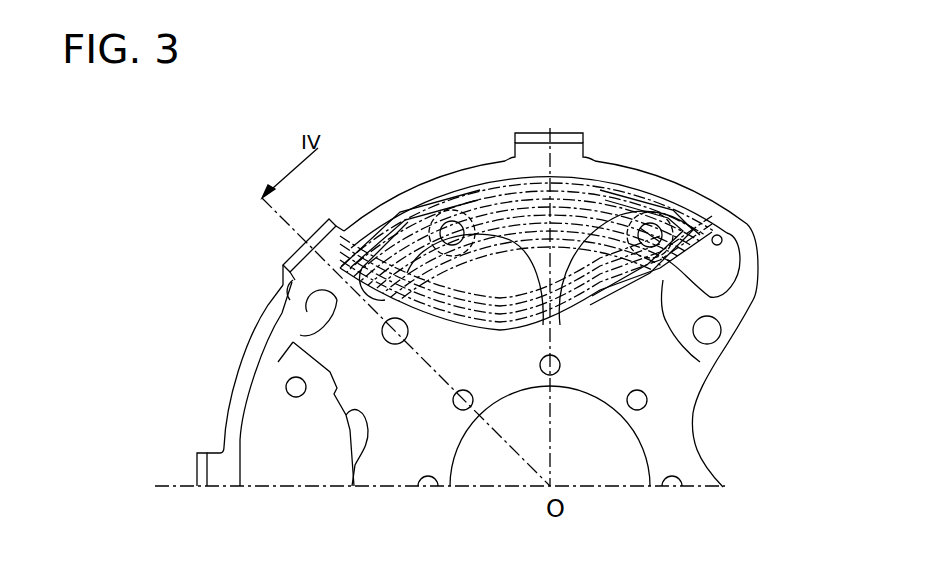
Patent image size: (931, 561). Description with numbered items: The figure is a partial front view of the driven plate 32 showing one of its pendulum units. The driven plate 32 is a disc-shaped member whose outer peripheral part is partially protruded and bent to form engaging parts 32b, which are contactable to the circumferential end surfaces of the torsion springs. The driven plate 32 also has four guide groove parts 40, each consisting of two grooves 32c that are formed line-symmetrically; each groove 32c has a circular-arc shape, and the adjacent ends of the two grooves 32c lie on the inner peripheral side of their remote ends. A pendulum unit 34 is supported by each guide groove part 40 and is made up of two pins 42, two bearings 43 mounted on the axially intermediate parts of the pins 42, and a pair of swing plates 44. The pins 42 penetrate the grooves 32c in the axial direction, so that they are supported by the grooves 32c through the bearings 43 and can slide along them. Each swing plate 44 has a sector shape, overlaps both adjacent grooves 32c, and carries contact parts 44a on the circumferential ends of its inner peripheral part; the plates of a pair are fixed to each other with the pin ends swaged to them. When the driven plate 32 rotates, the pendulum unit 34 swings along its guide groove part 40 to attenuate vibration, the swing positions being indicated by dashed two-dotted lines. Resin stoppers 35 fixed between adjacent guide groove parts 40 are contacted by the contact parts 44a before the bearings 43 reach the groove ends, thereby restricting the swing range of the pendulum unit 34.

The driven plate 32 is at (620, 180).
The engaging part 32b is at (533, 133).
The groove 32c is at (394, 207).
The pendulum unit 34 is at (622, 185).
The stopper 35 is at (710, 330).
The guide groove part 40 is at (672, 272).
The pin 42 is at (455, 230).
The bearing 43 is at (442, 200).
The swing plate 44 is at (580, 197).
The contact part 44a is at (347, 462).